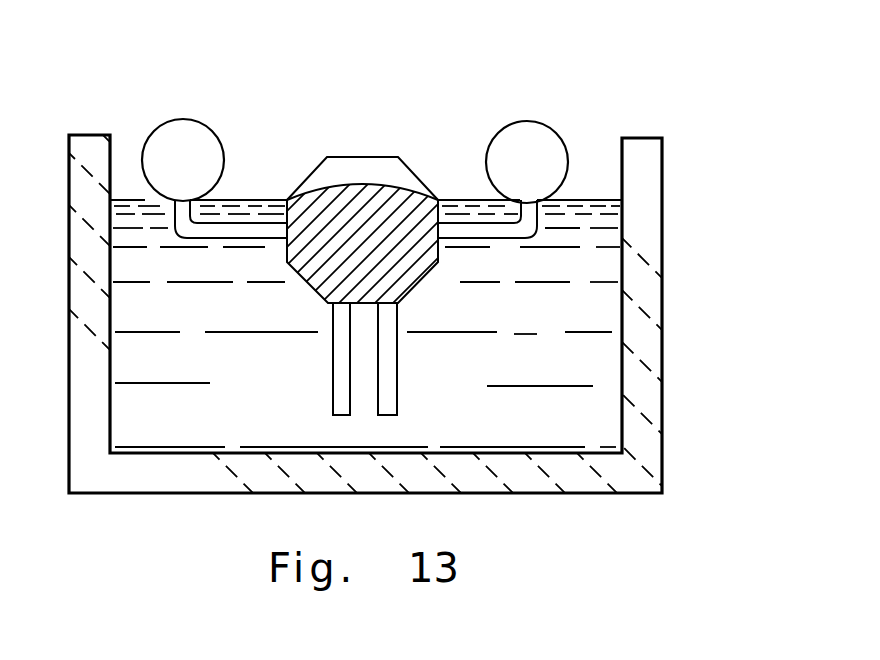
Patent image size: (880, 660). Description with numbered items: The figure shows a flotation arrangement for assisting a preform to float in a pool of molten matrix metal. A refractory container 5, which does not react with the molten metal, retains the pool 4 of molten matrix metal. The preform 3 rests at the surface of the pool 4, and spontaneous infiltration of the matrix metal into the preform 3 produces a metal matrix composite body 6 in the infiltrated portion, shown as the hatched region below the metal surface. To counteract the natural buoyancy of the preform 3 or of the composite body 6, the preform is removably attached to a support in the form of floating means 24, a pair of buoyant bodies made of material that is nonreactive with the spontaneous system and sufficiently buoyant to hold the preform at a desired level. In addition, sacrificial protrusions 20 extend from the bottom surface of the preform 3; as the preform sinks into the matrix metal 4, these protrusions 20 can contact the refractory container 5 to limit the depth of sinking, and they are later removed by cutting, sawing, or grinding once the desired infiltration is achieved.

The preform 3 is at (357, 168).
The pool of molten matrix metal 4 is at (366, 323).
The refractory container 5 is at (655, 335).
The metal matrix composite body 6 is at (302, 288).
The sacrificial protrusions 20 is at (341, 375).
The floating means 24 is at (185, 137).